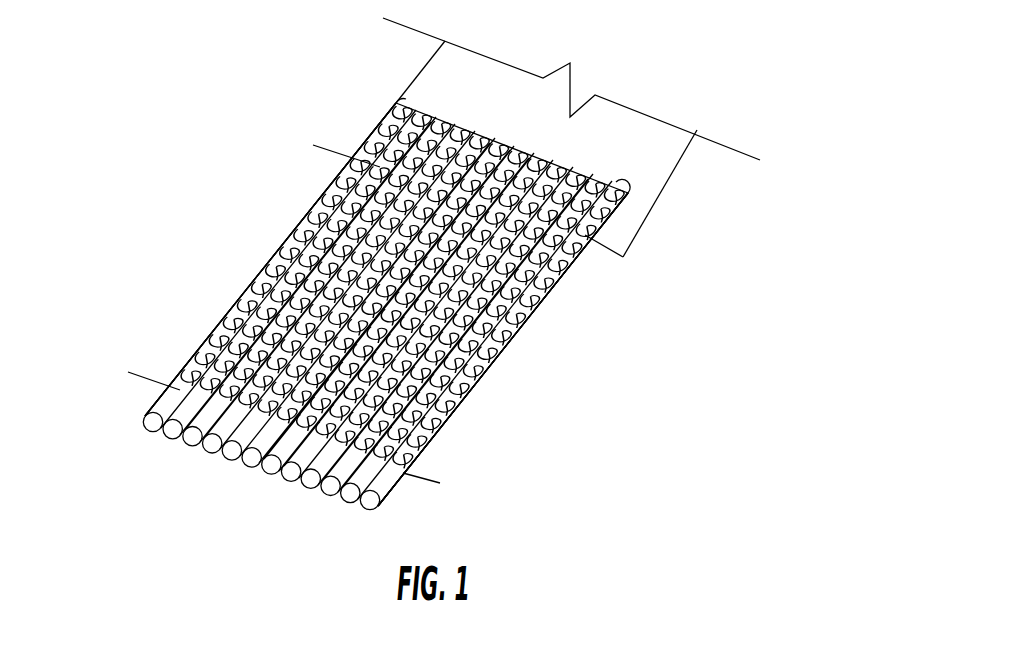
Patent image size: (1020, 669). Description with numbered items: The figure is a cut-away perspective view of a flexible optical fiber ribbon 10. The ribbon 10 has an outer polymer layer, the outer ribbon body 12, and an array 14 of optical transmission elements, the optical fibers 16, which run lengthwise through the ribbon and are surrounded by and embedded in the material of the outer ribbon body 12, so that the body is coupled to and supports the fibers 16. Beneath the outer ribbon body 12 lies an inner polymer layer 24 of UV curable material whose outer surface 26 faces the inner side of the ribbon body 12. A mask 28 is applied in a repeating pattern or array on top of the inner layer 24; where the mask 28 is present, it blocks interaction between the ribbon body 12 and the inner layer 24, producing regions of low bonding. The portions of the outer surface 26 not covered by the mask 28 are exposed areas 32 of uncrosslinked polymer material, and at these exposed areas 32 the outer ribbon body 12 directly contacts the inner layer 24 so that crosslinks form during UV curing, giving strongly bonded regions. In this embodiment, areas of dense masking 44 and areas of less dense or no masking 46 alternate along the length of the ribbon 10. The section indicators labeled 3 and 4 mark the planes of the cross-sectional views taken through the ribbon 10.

The optical fiber ribbon 10 is at (146, 96).
The outer ribbon body 12 is at (658, 150).
The array 14 is at (140, 450).
The optical fibers 16 is at (350, 493).
The inner polymer layer 24 is at (495, 357).
The outer surface 26 is at (538, 317).
The mask 28 is at (300, 227).
The exposed areas 32 is at (366, 158).
The areas of dense masking 44 is at (306, 186).
The areas of less dense or no masking 46 is at (262, 264).
The section line 3- 3 is at (128, 372).
The section line 4- 4 is at (313, 145).